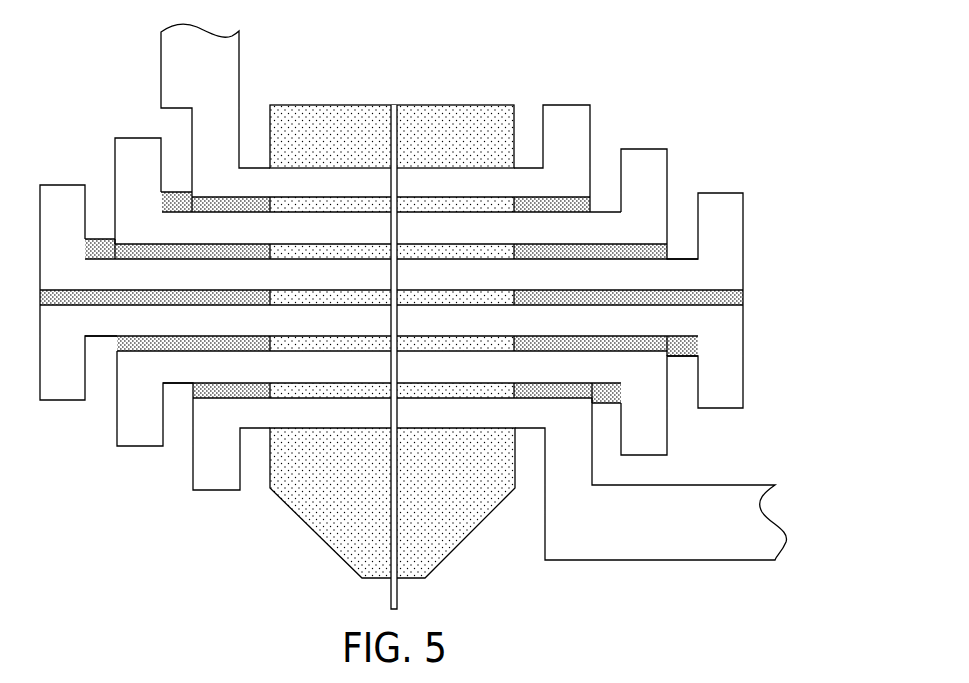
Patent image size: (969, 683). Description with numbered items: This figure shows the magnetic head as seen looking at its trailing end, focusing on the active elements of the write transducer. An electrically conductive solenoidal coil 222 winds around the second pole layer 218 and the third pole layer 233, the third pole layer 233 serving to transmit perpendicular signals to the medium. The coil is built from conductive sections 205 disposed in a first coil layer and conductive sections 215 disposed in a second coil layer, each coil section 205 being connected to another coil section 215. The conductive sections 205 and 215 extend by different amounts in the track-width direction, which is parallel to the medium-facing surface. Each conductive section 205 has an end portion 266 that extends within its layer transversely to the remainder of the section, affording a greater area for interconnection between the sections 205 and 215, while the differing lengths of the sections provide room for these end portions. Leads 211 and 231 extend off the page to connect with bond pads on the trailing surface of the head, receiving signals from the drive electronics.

The coil section 205 is at (605, 212).
The lead 211 is at (715, 485).
The coil section 215 is at (103, 239).
The second pole layer 218 is at (300, 522).
The solenoidal coil 222 is at (758, 162).
The lead 231 is at (239, 62).
The third pole layer 233 is at (395, 592).
The end portion 266 is at (722, 193).